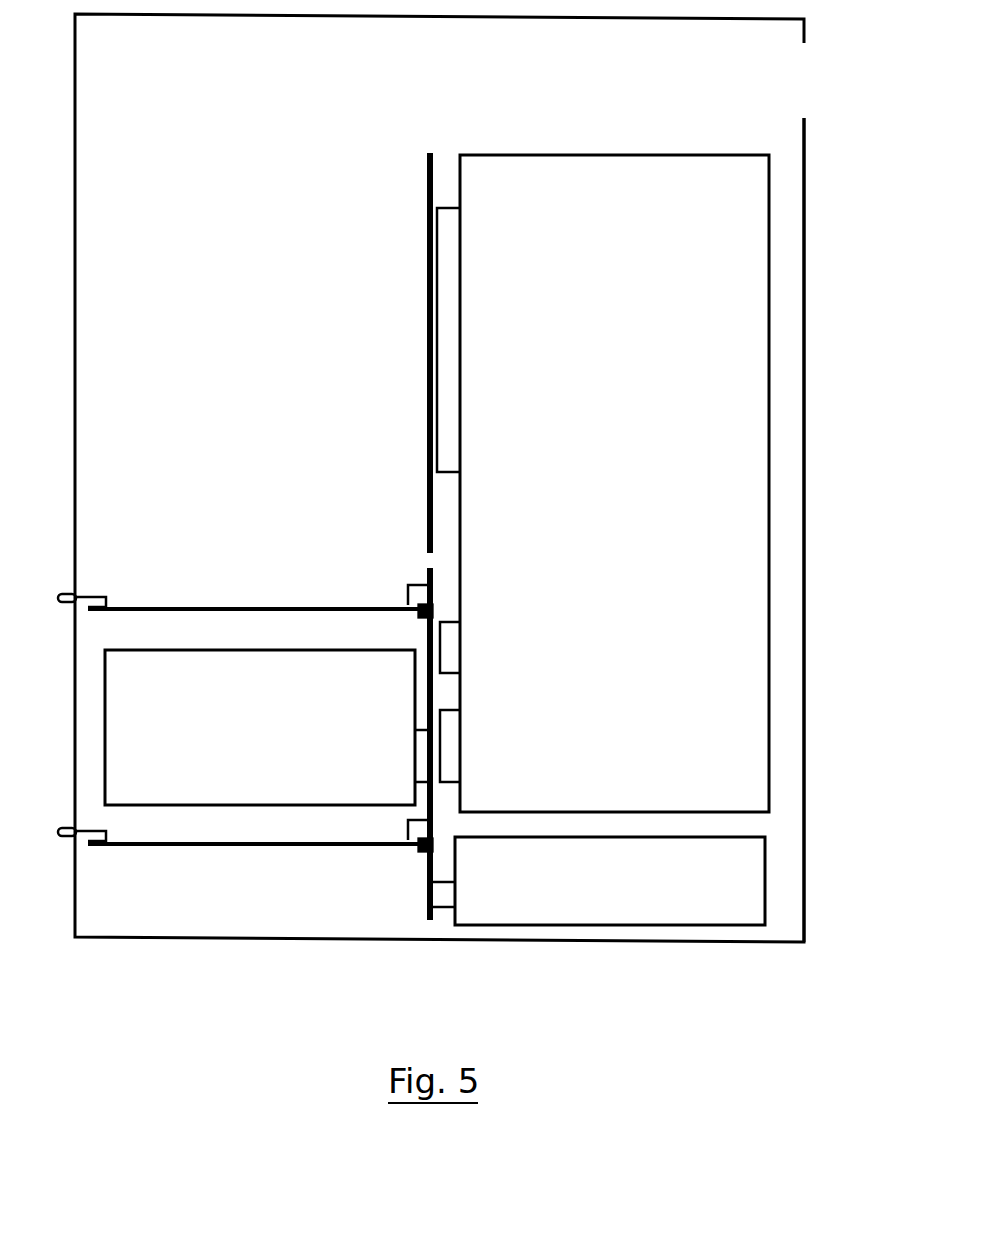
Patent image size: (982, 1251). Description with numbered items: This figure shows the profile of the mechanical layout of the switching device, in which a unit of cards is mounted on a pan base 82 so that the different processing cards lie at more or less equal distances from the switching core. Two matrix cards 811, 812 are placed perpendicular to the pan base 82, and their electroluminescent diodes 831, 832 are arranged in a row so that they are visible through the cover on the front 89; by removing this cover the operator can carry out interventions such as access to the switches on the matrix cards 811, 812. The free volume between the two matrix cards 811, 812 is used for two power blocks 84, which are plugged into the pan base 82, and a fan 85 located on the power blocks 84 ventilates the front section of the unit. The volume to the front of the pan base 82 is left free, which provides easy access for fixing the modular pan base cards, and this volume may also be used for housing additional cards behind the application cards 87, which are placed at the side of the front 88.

The front 89 is at (60, 264).
The front 88 is at (814, 305).
The pan base 82 is at (427, 200).
The application cards 87 is at (750, 549).
The fan 85 is at (742, 885).
The power blocks 84 is at (118, 707).
The matrix card 811 is at (322, 607).
The matrix card 812 is at (292, 847).
The electroluminescent diode 831 is at (95, 597).
The electroluminescent diode 832 is at (82, 842).